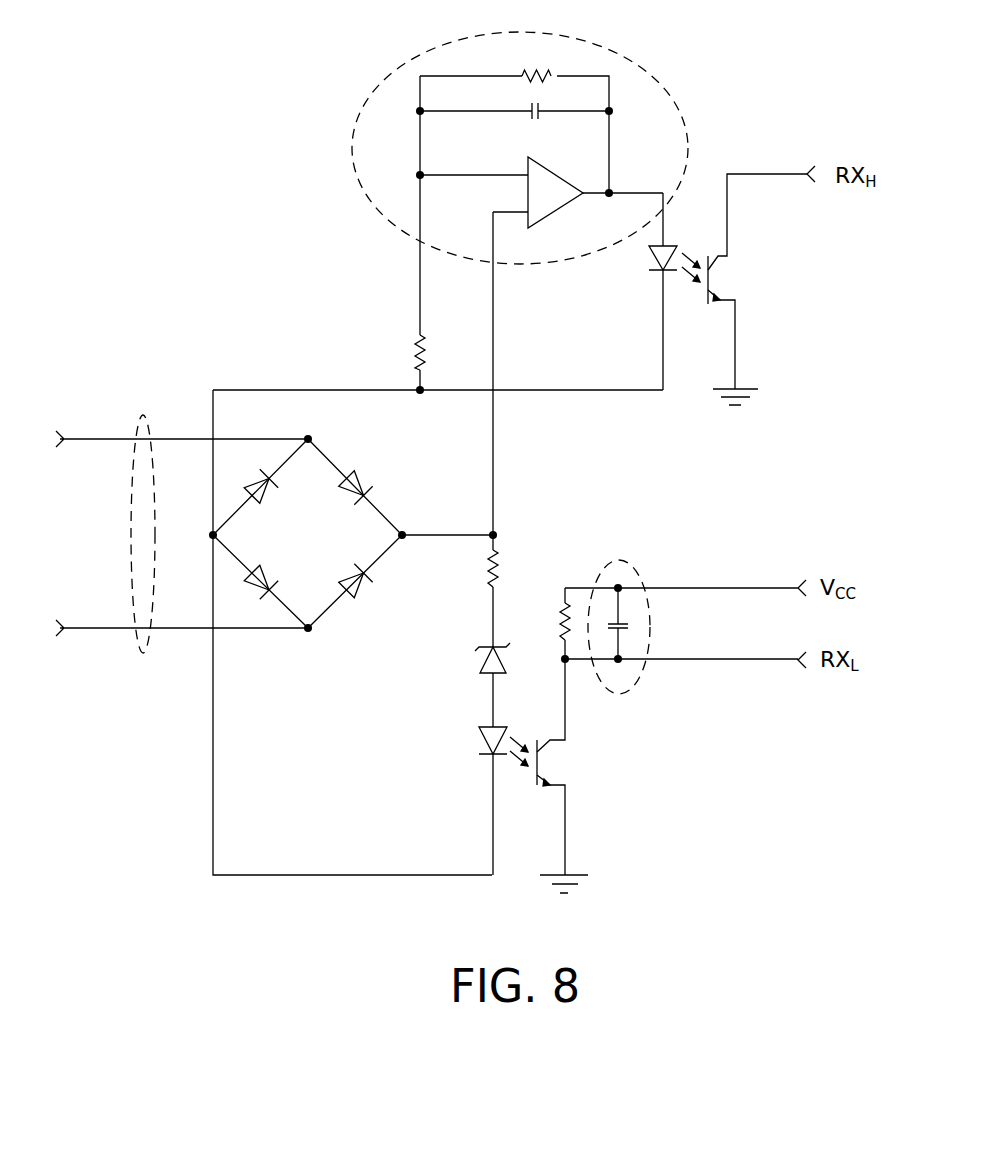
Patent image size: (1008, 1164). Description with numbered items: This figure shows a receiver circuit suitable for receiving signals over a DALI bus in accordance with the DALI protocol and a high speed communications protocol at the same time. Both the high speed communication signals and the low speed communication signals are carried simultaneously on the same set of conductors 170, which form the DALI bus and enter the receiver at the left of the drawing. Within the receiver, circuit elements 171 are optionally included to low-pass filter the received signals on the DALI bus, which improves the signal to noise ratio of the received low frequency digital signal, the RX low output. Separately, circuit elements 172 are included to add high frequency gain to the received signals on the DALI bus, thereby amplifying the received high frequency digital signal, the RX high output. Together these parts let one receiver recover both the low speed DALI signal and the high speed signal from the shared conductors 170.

The conductors 170 is at (142, 415).
The circuit elements 171 is at (614, 560).
The circuit elements 172 is at (650, 73).